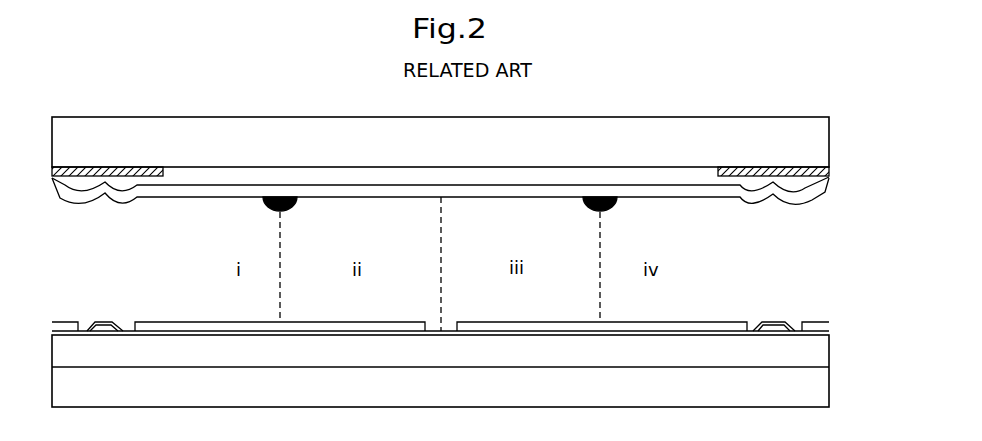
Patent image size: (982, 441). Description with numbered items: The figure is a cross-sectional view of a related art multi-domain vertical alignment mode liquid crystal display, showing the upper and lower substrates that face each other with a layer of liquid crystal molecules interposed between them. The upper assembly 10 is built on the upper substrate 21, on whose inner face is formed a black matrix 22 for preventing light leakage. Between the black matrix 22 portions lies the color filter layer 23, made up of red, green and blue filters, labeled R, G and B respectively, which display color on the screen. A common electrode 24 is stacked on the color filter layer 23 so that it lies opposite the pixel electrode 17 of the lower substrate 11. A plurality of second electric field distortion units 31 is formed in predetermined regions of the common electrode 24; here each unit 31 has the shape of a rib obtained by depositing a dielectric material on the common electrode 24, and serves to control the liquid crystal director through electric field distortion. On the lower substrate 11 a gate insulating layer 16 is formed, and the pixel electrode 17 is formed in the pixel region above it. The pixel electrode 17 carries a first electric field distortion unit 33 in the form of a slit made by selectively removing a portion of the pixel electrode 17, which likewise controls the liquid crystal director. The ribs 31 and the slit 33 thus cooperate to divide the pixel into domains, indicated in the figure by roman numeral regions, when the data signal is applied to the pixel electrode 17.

The upper substrate assembly 10 is at (476, 171).
The upper substrate 21 is at (822, 137).
The black matrix 22 is at (830, 168).
The color filter layer 23 is at (795, 183).
The common electrode 24 is at (817, 190).
The red color filter R is at (80, 192).
The green color filter G is at (193, 177).
The blue color filter B is at (783, 186).
The second electric field distortion unit 31 is at (612, 206).
The first electric field distortion unit 33 is at (447, 326).
The lower substrate 11 is at (815, 385).
The gate insulating layer 16 is at (829, 333).
The pixel electrode 17 is at (382, 323).